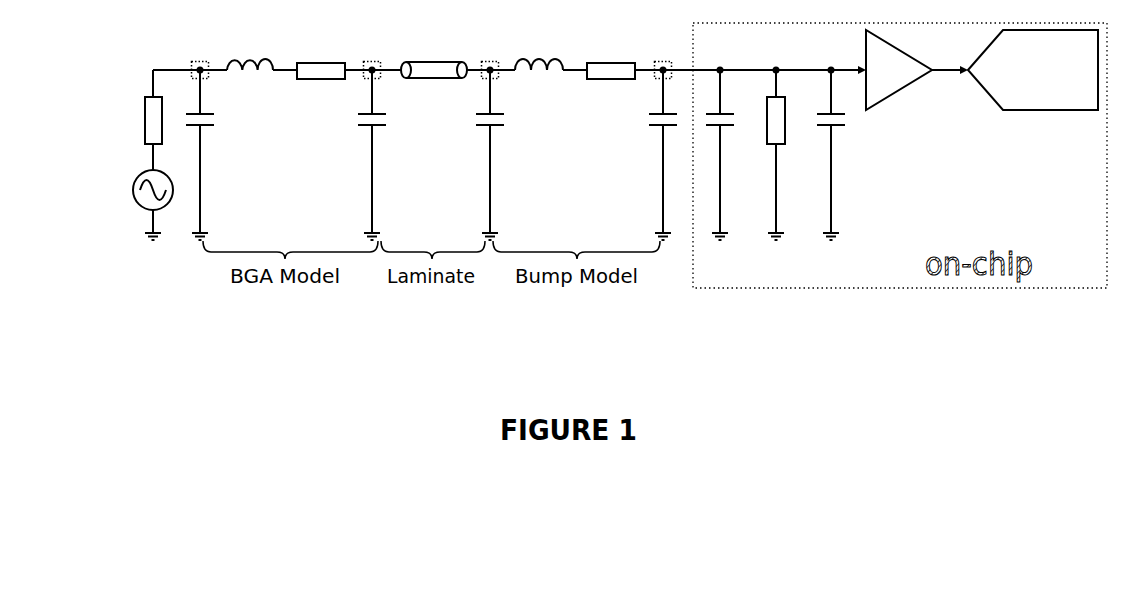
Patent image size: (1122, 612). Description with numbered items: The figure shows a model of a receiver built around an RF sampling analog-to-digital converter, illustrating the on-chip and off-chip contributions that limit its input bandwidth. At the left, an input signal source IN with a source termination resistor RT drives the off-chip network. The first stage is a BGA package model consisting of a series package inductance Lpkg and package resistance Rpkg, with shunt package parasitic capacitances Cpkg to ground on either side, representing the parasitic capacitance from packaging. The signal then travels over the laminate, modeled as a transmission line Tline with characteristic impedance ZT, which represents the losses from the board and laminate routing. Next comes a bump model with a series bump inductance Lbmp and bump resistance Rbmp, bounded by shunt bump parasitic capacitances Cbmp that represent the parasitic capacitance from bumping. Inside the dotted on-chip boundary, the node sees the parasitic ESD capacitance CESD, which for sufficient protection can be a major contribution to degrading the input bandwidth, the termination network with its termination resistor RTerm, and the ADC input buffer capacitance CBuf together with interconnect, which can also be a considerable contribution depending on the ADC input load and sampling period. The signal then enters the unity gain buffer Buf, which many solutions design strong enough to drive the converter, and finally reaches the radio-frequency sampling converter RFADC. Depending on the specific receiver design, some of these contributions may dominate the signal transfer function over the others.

The source termination resistor RT is at (152, 102).
The input signal source IN is at (157, 194).
The package inductance Lpkg is at (250, 51).
The package resistance Rpkg is at (321, 56).
The package parasitic capacitance Cpkg is at (351, 133).
The transmission line Tline is at (434, 55).
The transmission line impedance ZT is at (435, 95).
The bump inductance Lbmp is at (539, 51).
The bump resistance Rbmp is at (611, 56).
The bump parasitic capacitance Cbmp is at (641, 133).
The parasitic ESD capacitance CESD is at (720, 160).
The termination resistor RTerm is at (775, 160).
The ADC input buffer capacitance CBuf is at (831, 160).
The unity gain buffer Buf is at (899, 70).
The RF ADC RFADC is at (1033, 70).